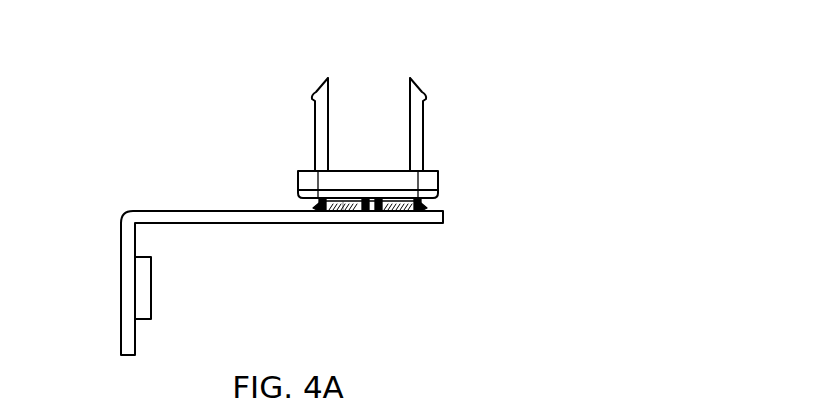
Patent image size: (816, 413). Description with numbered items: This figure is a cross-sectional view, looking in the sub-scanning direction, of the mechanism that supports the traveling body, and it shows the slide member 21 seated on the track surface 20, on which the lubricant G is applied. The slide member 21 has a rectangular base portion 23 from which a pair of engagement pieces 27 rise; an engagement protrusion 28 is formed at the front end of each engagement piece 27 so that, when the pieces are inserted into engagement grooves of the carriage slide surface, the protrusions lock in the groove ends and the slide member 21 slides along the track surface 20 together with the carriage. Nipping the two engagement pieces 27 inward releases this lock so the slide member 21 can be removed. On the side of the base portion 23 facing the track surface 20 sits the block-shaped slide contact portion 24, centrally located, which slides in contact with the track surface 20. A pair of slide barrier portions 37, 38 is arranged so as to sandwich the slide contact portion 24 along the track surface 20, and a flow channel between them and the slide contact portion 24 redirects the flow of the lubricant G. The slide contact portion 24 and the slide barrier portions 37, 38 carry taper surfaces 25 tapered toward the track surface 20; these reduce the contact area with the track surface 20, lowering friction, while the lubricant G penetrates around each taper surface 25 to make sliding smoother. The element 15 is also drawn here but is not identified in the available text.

The electronic component 15 is at (121, 258).
The track surface 20 is at (212, 210).
The slide member 21 is at (472, 113).
The base portion 23 is at (440, 183).
The slide contact portion 24 is at (363, 212).
The taper surface 25 is at (316, 212).
The engagement piece 27 is at (330, 123).
The engagement protrusion 28 is at (312, 97).
The slide barrier portion 37 is at (432, 202).
The slide barrier portion 38 is at (313, 208).
The lubricant G is at (343, 211).